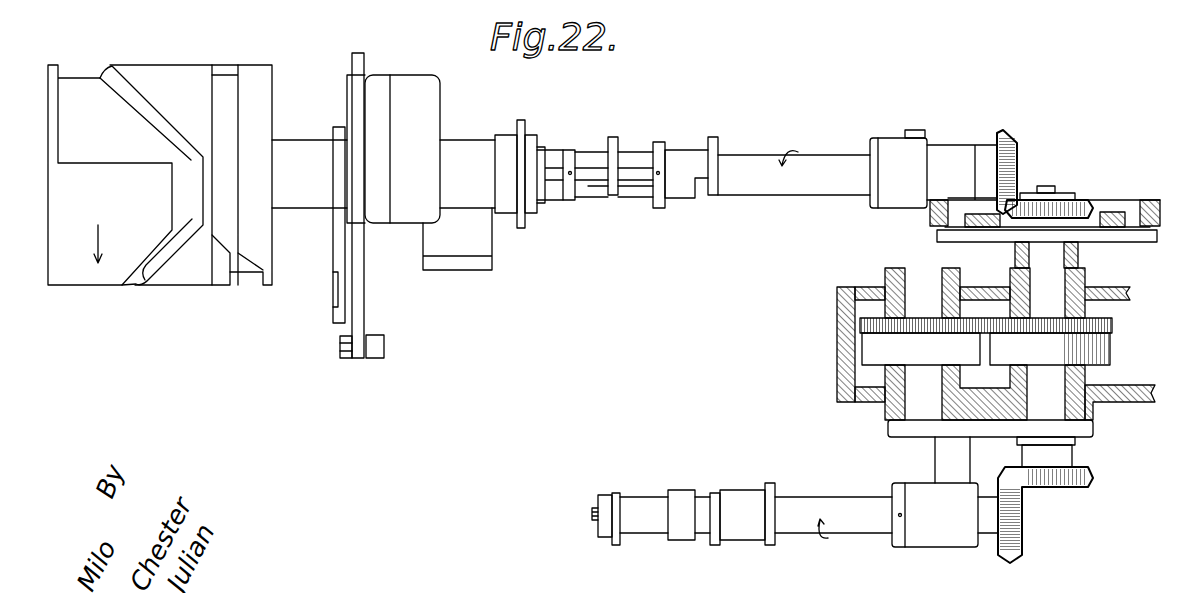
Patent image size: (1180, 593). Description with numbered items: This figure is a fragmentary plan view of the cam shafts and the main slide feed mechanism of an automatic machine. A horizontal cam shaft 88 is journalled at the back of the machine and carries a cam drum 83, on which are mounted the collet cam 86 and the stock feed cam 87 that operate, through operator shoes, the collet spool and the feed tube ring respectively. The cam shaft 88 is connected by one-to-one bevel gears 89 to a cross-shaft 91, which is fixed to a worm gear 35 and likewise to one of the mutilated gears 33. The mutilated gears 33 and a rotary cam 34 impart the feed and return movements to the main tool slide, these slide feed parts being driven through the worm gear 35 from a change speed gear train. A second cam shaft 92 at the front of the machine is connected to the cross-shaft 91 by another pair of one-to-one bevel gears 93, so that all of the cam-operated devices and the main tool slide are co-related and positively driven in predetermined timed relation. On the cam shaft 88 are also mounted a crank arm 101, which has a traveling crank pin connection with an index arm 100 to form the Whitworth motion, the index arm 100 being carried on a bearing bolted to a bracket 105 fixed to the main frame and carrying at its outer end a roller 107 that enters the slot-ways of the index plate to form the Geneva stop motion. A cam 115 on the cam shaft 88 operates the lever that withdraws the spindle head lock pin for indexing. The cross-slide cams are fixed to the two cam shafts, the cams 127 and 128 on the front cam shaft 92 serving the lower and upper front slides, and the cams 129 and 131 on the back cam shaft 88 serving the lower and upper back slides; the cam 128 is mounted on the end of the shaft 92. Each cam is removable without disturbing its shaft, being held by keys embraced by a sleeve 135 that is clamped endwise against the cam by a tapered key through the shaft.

The cam drum 83 is at (72, 288).
The stock feed cam 87 is at (128, 288).
The collet cam 86 is at (240, 288).
The crank arm 101 is at (335, 258).
The index arm 100 is at (366, 304).
The roller 107 is at (384, 348).
The bracket 105 is at (422, 112).
The cam 115 is at (520, 126).
The cam 131 is at (612, 136).
The sleeve 135 is at (680, 192).
The cam 129 is at (713, 136).
The cam shaft 88 is at (750, 160).
The bevel gears 89 is at (1085, 200).
The worm gear 35 is at (1146, 199).
The rotary cam 34 is at (1130, 236).
The cross-shaft 91 is at (1040, 256).
The mutilated gears 33 is at (1010, 352).
The bevel gears 93 is at (1055, 484).
The cam shaft 92 is at (856, 526).
The cam 127 is at (714, 546).
The cam 128 is at (613, 546).